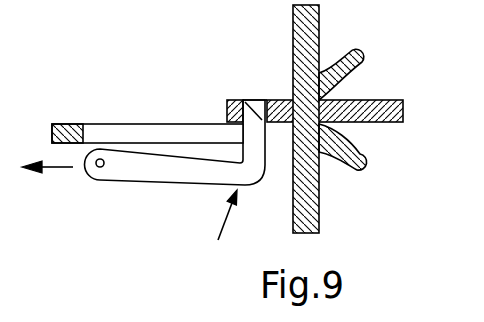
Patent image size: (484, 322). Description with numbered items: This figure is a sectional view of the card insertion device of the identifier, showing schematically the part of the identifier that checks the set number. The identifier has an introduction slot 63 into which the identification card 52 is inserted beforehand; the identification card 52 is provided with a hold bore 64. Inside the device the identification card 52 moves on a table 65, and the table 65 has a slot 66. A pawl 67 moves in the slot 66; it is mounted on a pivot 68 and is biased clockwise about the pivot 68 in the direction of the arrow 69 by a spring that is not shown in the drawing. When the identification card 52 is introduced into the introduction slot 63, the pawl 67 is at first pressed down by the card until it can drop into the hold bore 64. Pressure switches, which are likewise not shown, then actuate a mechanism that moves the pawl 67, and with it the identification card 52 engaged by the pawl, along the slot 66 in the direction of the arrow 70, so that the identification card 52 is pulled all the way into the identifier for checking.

The identification card 52 is at (389, 122).
The introduction slot 63 is at (357, 60).
The hold bore 64 is at (258, 100).
The table 65 is at (72, 123).
The slot 66 is at (140, 123).
The pawl 67 is at (165, 172).
The pivot 68 is at (100, 167).
The arrow 69 is at (242, 200).
The arrow 70 is at (35, 173).